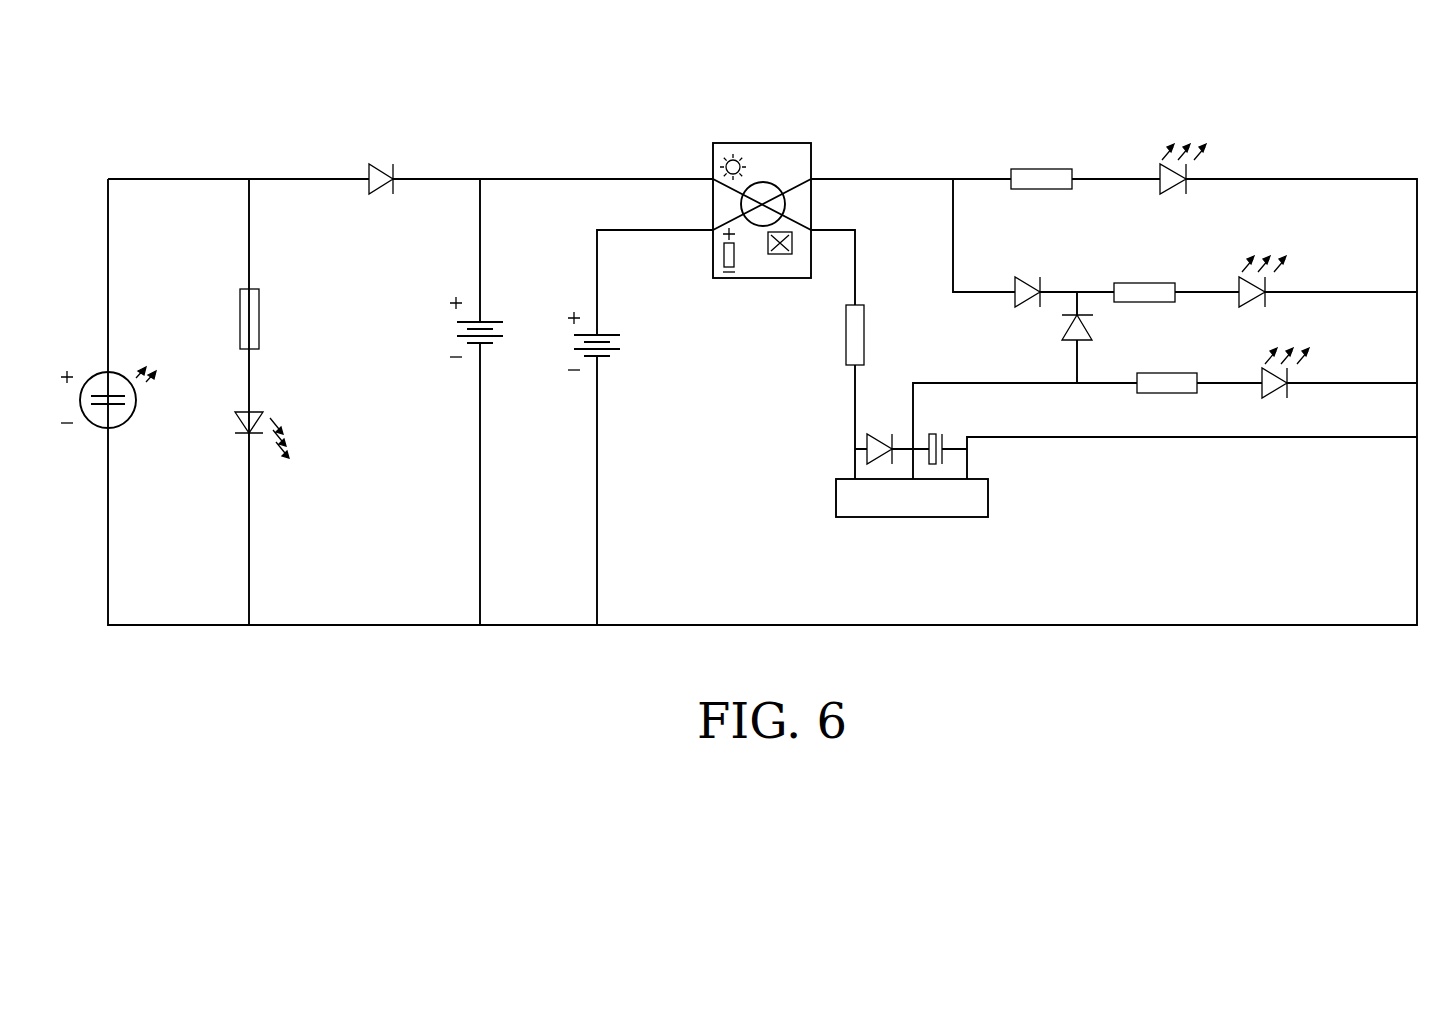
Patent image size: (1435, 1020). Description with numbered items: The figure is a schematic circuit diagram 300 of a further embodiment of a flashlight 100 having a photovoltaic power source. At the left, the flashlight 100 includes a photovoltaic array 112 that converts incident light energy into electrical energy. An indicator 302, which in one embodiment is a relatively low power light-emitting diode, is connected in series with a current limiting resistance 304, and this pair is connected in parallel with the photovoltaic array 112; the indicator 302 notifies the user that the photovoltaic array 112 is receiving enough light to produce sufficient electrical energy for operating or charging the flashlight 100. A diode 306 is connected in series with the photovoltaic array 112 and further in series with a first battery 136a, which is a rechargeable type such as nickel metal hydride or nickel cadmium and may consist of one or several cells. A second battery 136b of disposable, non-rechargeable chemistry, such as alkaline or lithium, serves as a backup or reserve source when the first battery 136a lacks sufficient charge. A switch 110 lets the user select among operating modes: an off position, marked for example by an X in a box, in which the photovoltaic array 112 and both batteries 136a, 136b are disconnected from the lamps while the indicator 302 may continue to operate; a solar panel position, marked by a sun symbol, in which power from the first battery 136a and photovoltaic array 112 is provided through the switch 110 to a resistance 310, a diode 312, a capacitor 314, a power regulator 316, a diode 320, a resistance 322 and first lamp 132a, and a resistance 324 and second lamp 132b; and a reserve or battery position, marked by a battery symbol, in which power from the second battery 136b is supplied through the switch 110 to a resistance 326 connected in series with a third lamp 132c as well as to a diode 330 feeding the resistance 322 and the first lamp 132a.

The flashlight 100 is at (739, 332).
The schematic circuit diagram 300 is at (739, 332).
The switch 110 is at (752, 143).
The photovoltaic array 112 is at (120, 428).
The first lamp 132a is at (1270, 282).
The second lamp 132b is at (1292, 372).
The third lamp 132c is at (1190, 168).
The first battery 136a is at (492, 318).
The second battery 136b is at (609, 330).
The indicator 302 is at (235, 416).
The current limiting resistance 304 is at (240, 320).
The diode 306 is at (380, 190).
The resistance 310 is at (846, 335).
The diode 312 is at (872, 434).
The capacitor 314 is at (945, 438).
The power regulator 316 is at (836, 495).
The diode 320 is at (1085, 325).
The resistance 322 is at (1148, 283).
The resistance 324 is at (1165, 393).
The resistance 326 is at (1045, 169).
The diode 330 is at (1030, 278).